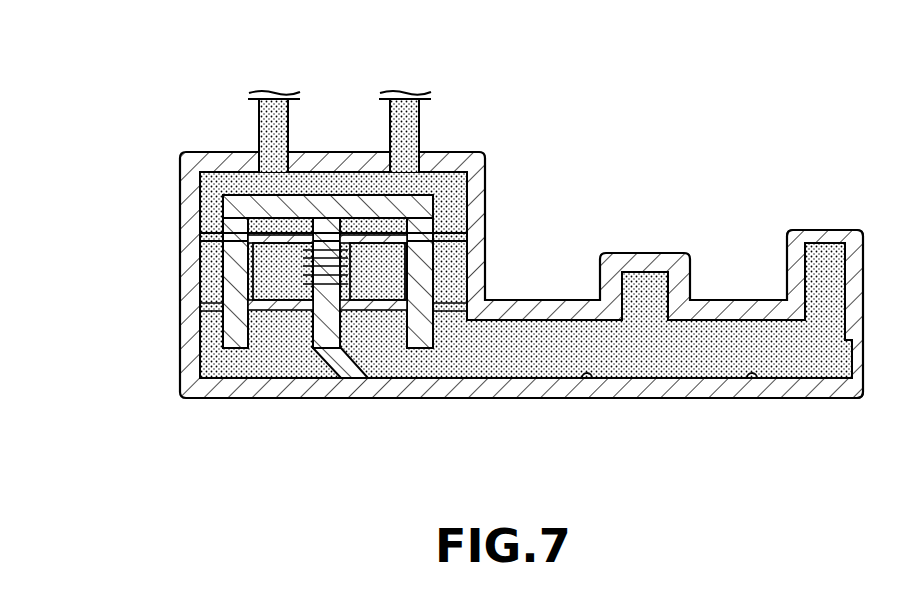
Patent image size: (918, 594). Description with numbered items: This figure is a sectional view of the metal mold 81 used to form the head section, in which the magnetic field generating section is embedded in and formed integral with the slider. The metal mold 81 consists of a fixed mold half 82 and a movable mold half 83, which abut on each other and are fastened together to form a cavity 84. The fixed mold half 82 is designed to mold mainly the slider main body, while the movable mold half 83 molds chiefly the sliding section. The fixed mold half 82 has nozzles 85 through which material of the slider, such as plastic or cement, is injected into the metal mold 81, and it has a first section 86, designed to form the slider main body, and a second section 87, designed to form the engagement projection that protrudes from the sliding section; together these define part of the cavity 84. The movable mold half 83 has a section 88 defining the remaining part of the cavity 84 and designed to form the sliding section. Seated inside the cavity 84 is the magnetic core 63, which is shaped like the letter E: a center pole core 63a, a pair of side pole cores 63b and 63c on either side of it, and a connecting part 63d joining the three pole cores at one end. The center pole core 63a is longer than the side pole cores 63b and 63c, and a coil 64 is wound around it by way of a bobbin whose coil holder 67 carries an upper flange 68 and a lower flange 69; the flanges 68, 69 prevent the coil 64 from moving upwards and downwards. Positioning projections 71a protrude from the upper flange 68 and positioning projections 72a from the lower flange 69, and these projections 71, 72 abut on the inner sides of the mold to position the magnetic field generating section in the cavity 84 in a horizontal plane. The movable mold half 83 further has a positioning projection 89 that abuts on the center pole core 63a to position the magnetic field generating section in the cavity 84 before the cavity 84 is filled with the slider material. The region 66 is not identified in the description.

The magnetic core 63 is at (470, 250).
The center pole core 63a is at (312, 398).
The side pole core 63b is at (235, 398).
The side pole core 63c is at (418, 398).
The connecting part 63d is at (327, 195).
The coil 64 is at (368, 195).
The cavity 66 is at (470, 272).
The coil holder 67 is at (303, 270).
The upper flange 68 is at (303, 252).
The lower flange 69 is at (303, 285).
The positioning projection 71 is at (200, 226).
The positioning projection 71a is at (200, 240).
The positioning projection 72 is at (200, 355).
The positioning projection 72a is at (205, 305).
The metal mold 81 is at (672, 166).
The fixed mold half 82 is at (826, 230).
The movable mold half 83 is at (853, 398).
The cavity 84 is at (752, 384).
The nozzle 85 is at (282, 122).
The first section 86 is at (487, 162).
The second section 87 is at (645, 272).
The section 88 is at (587, 384).
The positioning projection 89 is at (365, 398).